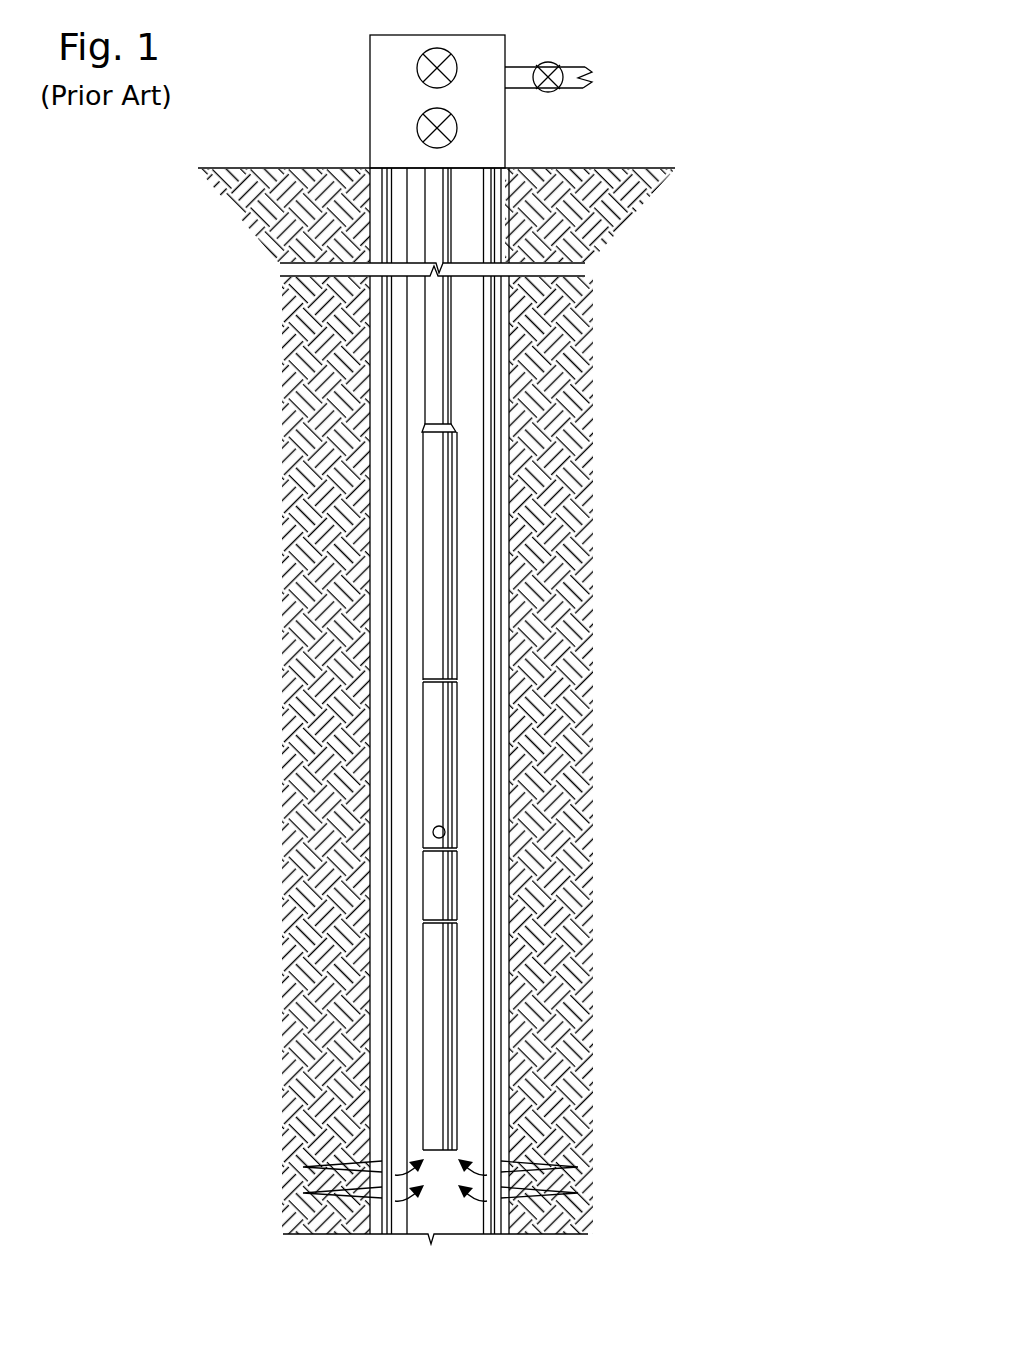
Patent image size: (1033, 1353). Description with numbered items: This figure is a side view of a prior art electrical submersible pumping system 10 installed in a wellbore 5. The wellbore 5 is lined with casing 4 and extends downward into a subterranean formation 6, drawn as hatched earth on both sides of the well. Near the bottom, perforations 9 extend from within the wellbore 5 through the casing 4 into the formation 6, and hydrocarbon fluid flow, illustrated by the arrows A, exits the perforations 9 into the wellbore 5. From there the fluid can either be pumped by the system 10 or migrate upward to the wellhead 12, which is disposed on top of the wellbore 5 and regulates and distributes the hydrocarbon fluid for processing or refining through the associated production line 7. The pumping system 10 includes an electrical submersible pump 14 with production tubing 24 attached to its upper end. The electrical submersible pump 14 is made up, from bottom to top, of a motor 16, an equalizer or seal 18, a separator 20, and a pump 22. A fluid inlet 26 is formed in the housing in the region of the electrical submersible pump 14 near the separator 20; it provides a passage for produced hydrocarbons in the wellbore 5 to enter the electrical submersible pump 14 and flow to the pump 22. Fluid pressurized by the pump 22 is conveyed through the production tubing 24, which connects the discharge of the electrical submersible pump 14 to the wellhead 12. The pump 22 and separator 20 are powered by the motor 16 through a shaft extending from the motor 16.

The casing 4 is at (380, 200).
The wellbore 5 is at (470, 378).
The subterranean formation 6 is at (565, 950).
The production line 7 is at (570, 66).
The perforations 9 is at (563, 1167).
The submersible pumping system 10 is at (462, 642).
The wellhead 12 is at (367, 58).
The electrical submersible pump (ESP) 14 is at (467, 879).
The motor 16 is at (462, 1058).
The equalizer or seal 18 is at (457, 902).
The separator 20 is at (423, 763).
The pump 22 is at (420, 629).
The production tubing 24 is at (425, 347).
The fluid inlet 26 is at (433, 835).
The arrows illustrating hydrocarbon fluid flow A is at (472, 1212).